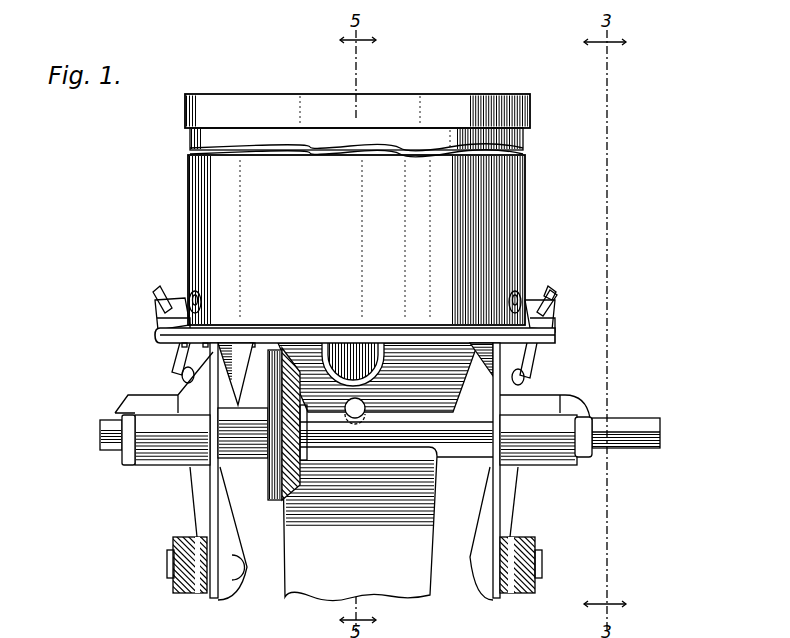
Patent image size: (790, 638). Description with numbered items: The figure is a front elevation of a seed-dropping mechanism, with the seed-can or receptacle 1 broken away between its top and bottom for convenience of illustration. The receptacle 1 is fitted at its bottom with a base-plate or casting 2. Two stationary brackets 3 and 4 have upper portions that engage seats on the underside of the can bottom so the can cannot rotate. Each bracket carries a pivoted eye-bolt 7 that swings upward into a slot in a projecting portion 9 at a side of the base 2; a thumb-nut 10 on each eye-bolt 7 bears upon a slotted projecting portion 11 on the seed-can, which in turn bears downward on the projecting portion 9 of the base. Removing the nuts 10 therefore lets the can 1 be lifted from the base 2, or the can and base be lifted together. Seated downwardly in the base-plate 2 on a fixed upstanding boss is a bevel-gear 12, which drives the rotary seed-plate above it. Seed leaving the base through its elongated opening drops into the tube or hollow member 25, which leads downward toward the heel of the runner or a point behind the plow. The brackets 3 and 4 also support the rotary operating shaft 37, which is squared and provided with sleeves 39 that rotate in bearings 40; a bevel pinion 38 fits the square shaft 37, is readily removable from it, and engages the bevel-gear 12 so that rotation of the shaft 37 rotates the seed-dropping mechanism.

The seed-can or receptacle 1 is at (205, 185).
The bottom or base-plate 2 is at (290, 328).
The stationary bracket 3 is at (210, 350).
The stationary bracket 4 is at (488, 352).
The pivoted eye-bolt 7 is at (183, 358).
The projecting portion of base 9 is at (160, 333).
The thumb-nut 10 is at (556, 312).
The projecting portion of seed-can 11 is at (180, 295).
The bevel-gear 12 is at (437, 375).
The tube or hollow member 25 is at (292, 537).
The rotary operating shaft 37 is at (643, 440).
The bevel pinion 38 is at (282, 503).
The sleeve 39 is at (122, 462).
The bearing 40 is at (170, 452).